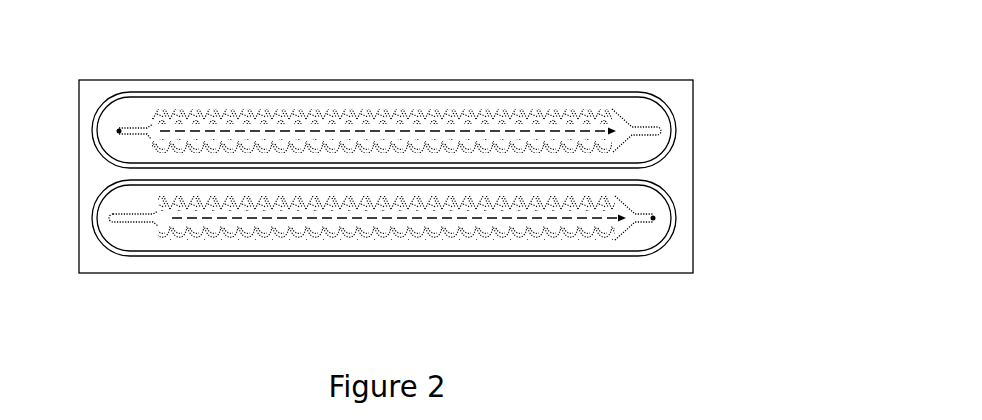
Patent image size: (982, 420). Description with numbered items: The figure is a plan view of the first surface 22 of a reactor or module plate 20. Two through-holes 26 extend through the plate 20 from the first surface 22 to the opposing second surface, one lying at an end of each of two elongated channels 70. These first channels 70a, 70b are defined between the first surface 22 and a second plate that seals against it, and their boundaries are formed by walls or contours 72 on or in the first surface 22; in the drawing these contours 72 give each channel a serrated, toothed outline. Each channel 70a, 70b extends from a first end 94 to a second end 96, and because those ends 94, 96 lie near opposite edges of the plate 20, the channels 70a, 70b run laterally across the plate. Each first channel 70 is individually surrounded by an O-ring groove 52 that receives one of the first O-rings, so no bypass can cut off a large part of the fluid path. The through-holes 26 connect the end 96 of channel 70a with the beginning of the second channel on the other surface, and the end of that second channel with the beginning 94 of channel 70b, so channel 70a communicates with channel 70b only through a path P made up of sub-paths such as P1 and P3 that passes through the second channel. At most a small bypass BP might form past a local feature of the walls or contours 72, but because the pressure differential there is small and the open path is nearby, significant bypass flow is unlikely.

The reactor or module plate 20 is at (576, 276).
The first surface 22 is at (662, 268).
The through-hole 26 is at (113, 125).
The O-ring groove 52 is at (672, 117).
The elongated channel 70 is at (385, 232).
The first channel 70a is at (187, 225).
The first channel 70b is at (258, 140).
The walls or contours 72 is at (150, 145).
The first end 94 is at (129, 115).
The second end 96 is at (642, 116).
The bypass BP is at (402, 120).
The path P is at (402, 240).
The sub-path P1 is at (387, 218).
The sub-path P3 is at (455, 133).